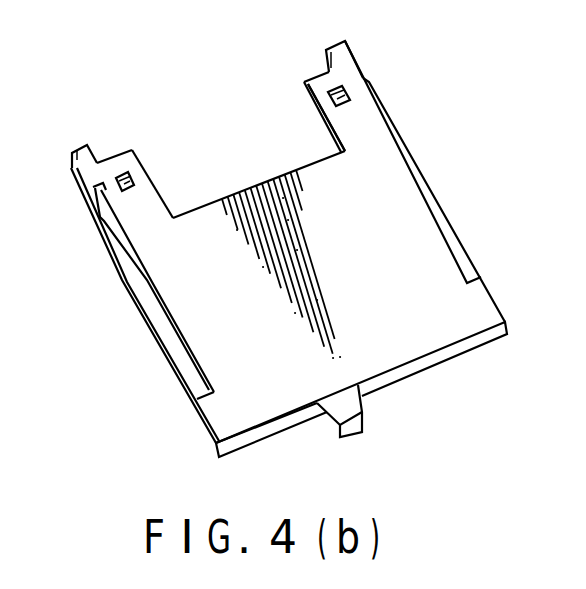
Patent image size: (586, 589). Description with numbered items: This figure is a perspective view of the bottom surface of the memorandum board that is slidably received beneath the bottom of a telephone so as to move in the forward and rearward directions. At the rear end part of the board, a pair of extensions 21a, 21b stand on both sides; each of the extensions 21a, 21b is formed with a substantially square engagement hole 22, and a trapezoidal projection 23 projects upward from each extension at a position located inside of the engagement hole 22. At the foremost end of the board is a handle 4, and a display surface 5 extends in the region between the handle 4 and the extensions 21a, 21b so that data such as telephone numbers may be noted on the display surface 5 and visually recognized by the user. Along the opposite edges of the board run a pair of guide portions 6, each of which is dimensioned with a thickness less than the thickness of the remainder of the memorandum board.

The handle 4 is at (355, 424).
The display surface 5 is at (204, 433).
The guide portion 6 is at (170, 332).
The extension 21a is at (149, 208).
The extension 21b is at (341, 120).
The engagement hole 22 is at (120, 172).
The trapezoidal projection 23 is at (315, 120).